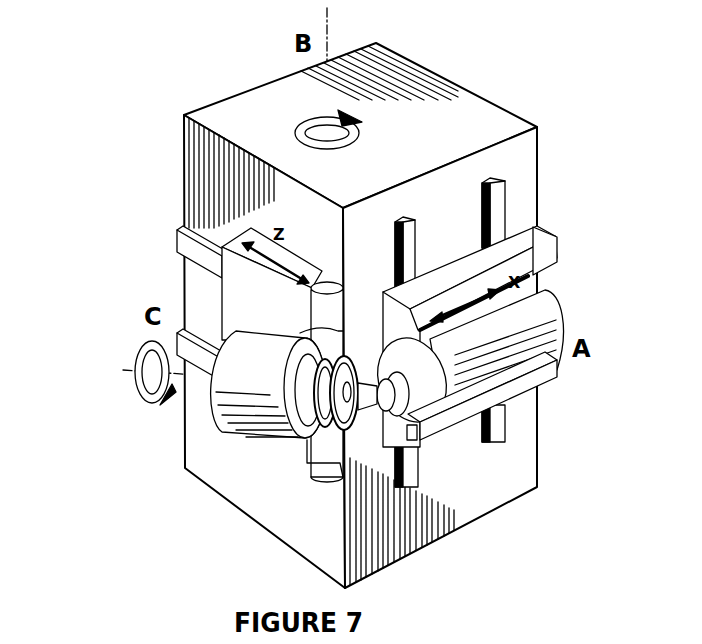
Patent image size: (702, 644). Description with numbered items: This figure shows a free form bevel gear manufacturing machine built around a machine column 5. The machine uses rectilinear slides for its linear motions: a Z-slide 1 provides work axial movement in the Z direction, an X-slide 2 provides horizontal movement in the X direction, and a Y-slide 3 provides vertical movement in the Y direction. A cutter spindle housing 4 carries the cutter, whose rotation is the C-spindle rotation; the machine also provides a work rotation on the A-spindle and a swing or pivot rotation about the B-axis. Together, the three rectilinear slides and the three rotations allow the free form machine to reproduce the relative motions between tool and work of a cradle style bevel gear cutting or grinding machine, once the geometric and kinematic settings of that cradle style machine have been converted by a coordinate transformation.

The Z-slide 1 is at (182, 355).
The X-slide 2 is at (292, 395).
The Y-slide 3 is at (221, 409).
The cutter spindle housing 4 is at (190, 441).
The machine column 5 is at (279, 315).